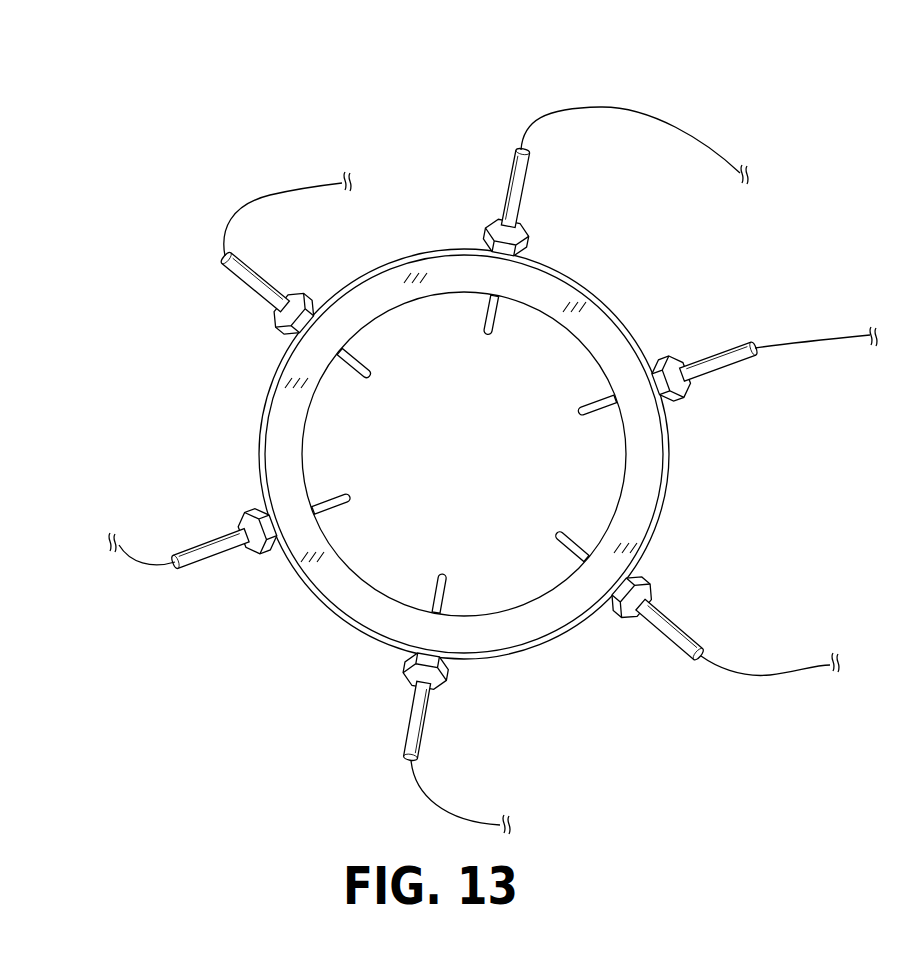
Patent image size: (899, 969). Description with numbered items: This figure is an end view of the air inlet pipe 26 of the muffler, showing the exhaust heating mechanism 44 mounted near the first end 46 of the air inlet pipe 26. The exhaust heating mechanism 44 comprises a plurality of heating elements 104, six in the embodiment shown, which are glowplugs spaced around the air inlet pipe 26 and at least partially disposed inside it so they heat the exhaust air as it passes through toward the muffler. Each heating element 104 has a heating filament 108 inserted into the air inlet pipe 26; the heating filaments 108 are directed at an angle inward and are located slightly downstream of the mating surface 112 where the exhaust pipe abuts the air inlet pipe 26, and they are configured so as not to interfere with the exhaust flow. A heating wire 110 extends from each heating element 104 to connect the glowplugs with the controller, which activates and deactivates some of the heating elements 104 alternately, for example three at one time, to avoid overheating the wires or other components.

The air inlet pipe 26 is at (669, 474).
The exhaust heating mechanism 44 is at (468, 203).
The first end of the air inlet pipe 46 is at (429, 494).
The heating element 104 is at (521, 189).
The heating filament 108 is at (497, 315).
The heating wire 110 is at (654, 112).
The mating surface 112 is at (282, 444).